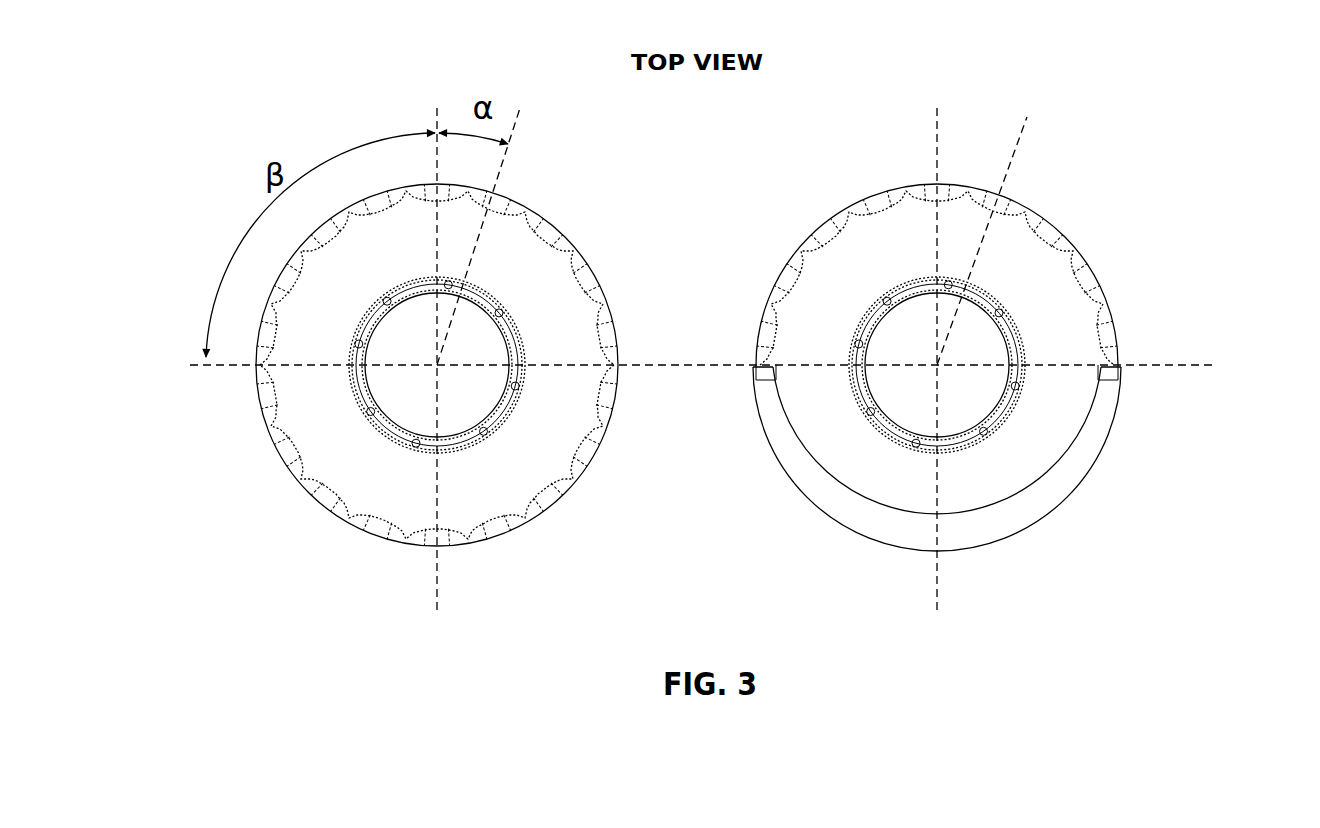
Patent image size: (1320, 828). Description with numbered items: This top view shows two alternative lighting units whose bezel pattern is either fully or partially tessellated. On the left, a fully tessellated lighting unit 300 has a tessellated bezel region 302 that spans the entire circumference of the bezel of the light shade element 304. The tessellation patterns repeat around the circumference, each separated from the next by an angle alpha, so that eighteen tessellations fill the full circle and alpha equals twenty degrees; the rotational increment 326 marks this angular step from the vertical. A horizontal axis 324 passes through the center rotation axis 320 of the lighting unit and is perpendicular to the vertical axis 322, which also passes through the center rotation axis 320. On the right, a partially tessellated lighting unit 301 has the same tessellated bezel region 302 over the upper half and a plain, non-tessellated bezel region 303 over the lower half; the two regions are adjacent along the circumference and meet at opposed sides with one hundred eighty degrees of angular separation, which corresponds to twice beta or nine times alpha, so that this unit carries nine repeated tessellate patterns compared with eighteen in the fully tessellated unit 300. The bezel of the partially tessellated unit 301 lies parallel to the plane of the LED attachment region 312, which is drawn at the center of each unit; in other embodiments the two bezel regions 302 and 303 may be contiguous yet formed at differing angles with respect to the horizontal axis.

The fully tessellated lighting unit 300 is at (163, 163).
The partially tessellated lighting unit 301 is at (1200, 152).
The tessellated bezel region 302 is at (595, 274).
The non-tessellated bezel region 303 is at (787, 438).
The light shade element 304 is at (516, 452).
The LED attachment region 312 is at (518, 340).
The center rotation axis 320 is at (941, 372).
The vertical axis 322 is at (450, 578).
The horizontal axis 324 is at (1180, 358).
The rotational increment 326 is at (749, 224).